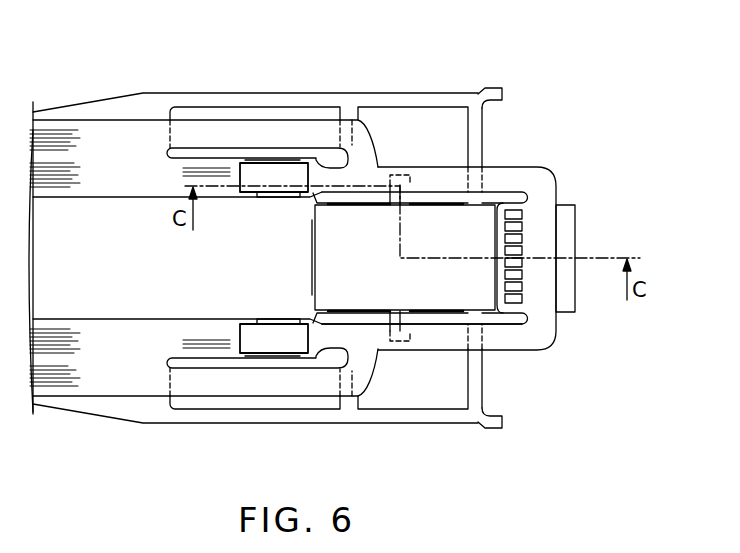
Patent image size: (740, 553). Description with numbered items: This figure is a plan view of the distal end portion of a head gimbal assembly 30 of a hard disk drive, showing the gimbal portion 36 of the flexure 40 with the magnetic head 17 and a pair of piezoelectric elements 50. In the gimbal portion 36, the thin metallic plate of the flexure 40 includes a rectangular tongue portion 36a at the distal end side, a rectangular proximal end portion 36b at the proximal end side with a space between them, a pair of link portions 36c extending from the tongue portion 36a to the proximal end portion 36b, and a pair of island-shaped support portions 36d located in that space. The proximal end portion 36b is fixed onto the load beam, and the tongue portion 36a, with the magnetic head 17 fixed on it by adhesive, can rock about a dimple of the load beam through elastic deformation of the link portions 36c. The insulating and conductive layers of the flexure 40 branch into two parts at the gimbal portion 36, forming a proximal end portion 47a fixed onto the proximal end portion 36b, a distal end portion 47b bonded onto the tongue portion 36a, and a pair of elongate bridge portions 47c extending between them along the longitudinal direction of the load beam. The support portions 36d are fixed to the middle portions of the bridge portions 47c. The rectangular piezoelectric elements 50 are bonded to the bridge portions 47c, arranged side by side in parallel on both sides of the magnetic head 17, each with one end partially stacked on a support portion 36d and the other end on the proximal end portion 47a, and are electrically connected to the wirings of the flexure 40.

The head gimbal assembly (HGA) 30 is at (80, 80).
The gimbal portion 36 is at (291, 80).
The tongue portion 36a is at (432, 302).
The proximal end portion 36b is at (240, 192).
The link portions 36c is at (420, 100).
The island-shaped support portions 36d is at (340, 147).
The magnetic head 17 is at (428, 222).
The flexure 40 is at (532, 282).
The proximal end portion 47a is at (228, 190).
The distal end portion 47b is at (538, 235).
The bridge portions 47c is at (248, 158).
The piezoelectric elements 50 is at (283, 180).